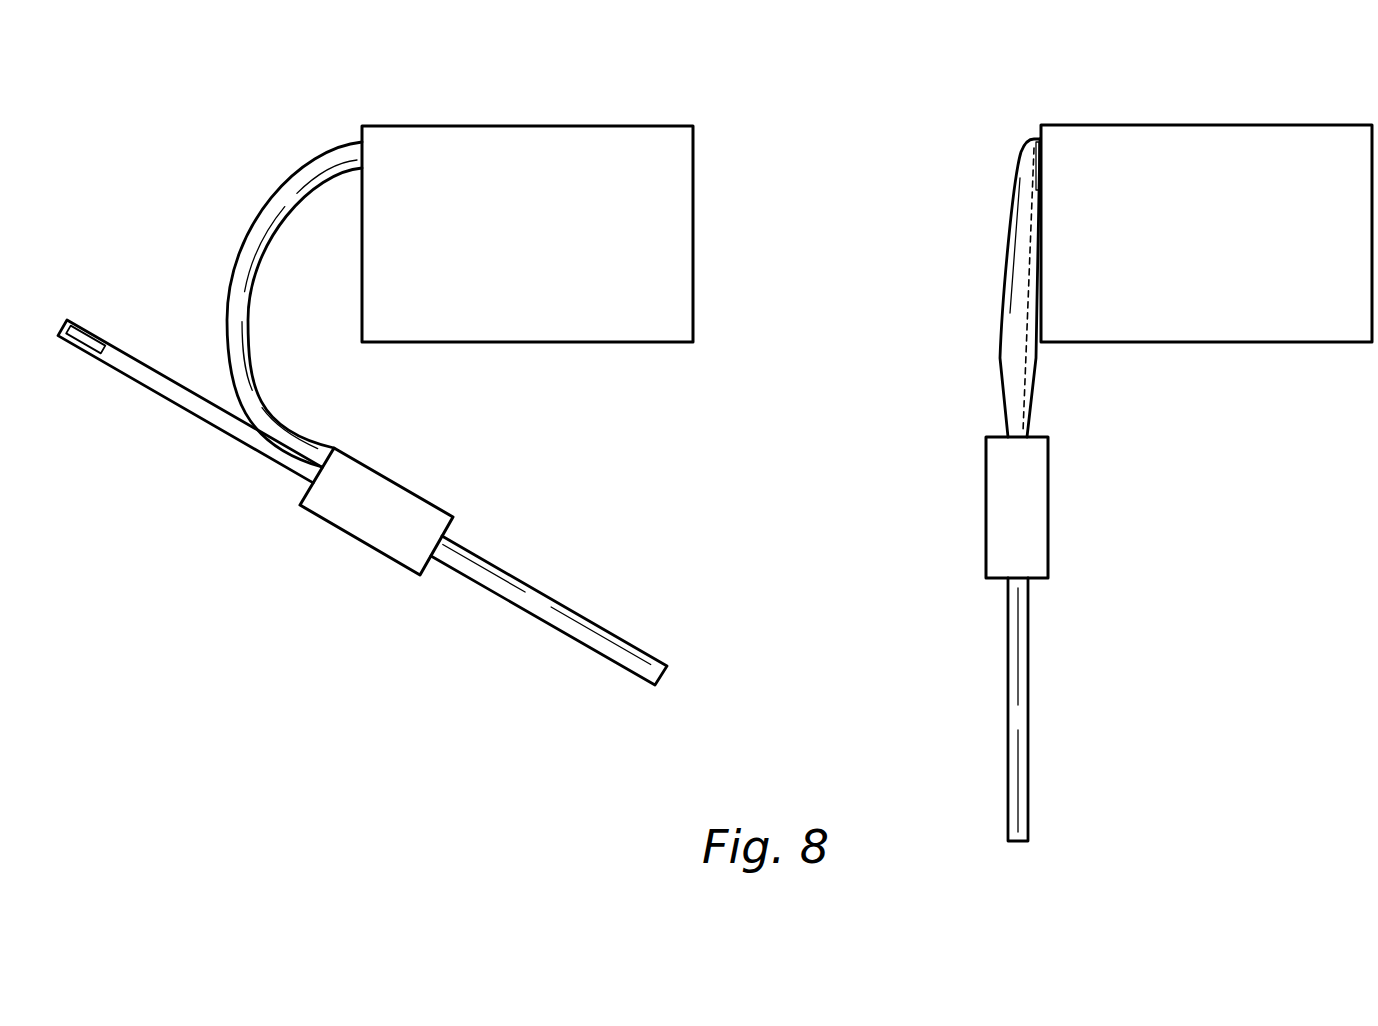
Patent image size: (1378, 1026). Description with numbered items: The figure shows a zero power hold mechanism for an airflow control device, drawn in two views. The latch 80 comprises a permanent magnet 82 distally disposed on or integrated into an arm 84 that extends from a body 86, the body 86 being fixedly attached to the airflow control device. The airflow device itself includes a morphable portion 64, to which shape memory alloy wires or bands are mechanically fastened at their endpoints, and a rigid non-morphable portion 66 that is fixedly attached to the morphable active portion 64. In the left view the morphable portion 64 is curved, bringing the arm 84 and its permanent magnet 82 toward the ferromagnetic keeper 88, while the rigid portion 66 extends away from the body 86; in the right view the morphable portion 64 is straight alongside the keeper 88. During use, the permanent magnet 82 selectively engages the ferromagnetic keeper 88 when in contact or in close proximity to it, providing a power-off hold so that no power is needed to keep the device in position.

The morphable portion 64 is at (261, 215).
The rigid non-morphable portion 66 is at (592, 623).
The latch 80 is at (375, 549).
The permanent magnet 82 is at (90, 337).
The arm 84 is at (150, 389).
The body 86 is at (382, 475).
The ferromagnetic keeper 88 is at (575, 124).